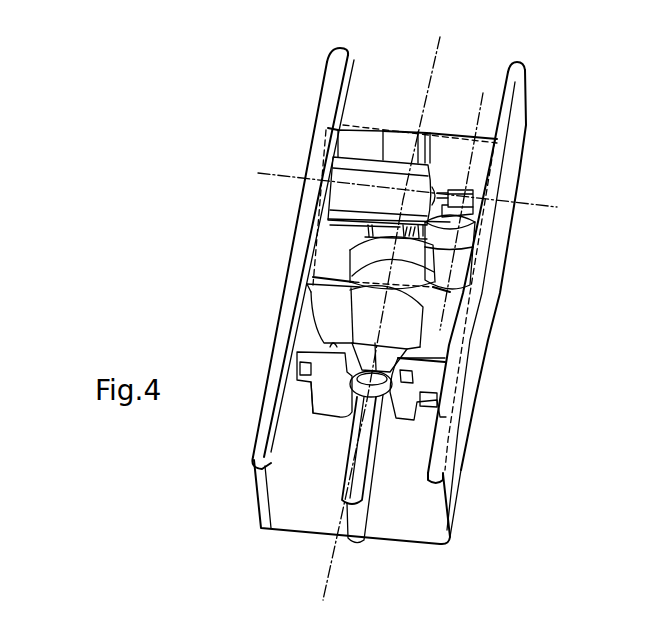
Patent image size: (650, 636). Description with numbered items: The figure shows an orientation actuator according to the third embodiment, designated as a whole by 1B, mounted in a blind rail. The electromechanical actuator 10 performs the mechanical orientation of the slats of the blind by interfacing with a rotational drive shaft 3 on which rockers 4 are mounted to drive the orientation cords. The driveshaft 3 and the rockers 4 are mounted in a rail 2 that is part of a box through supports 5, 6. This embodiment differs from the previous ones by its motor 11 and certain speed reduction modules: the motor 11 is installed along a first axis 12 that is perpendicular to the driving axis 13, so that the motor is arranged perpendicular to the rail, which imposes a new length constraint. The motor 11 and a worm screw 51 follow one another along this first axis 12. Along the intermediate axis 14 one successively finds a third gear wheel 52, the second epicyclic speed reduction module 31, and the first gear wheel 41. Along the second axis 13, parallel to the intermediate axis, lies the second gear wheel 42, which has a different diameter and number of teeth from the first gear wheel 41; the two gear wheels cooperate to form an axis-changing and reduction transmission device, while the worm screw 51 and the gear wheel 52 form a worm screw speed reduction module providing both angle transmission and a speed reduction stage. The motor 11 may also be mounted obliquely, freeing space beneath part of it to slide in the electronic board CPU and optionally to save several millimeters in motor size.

The pump module assembly 1B is at (79, 251).
The rail 2 is at (513, 153).
The rotational drive shaft 3 is at (367, 495).
The rockers 4 is at (362, 329).
The support 5 is at (322, 320).
The support 6 is at (427, 380).
The electromechanical actuator 10 is at (492, 177).
The motor 11 is at (340, 213).
The first axis 12 is at (271, 170).
The driving axis 13 is at (440, 37).
The intermediate axis 14 is at (480, 112).
The second epicyclic speed reduction module 31 is at (461, 258).
The first gear wheel 41 is at (455, 276).
The second gear wheel 42 is at (362, 252).
The worm screw 51 is at (480, 196).
The third gear wheel 52 is at (476, 212).
The electronic board CPU is at (367, 150).